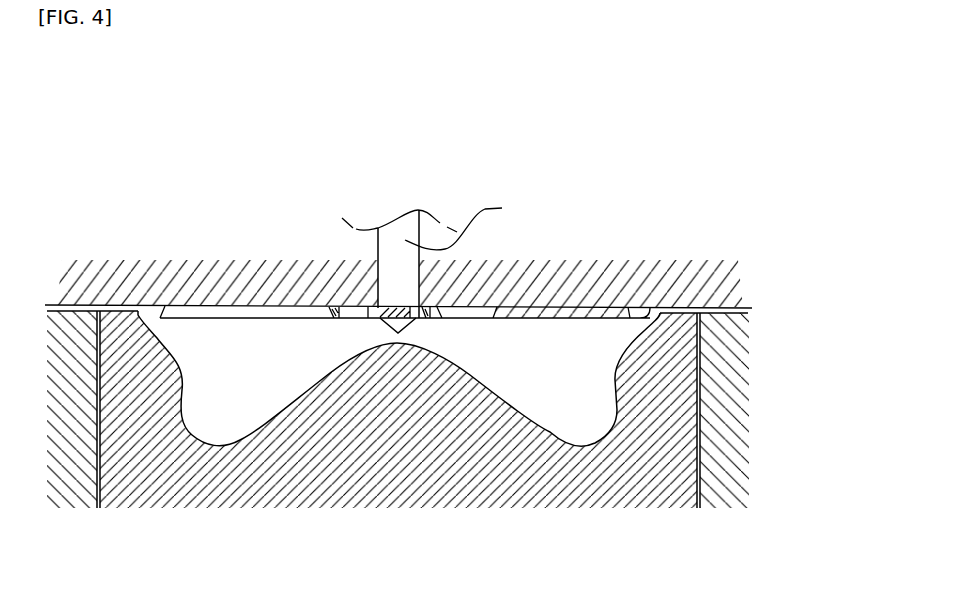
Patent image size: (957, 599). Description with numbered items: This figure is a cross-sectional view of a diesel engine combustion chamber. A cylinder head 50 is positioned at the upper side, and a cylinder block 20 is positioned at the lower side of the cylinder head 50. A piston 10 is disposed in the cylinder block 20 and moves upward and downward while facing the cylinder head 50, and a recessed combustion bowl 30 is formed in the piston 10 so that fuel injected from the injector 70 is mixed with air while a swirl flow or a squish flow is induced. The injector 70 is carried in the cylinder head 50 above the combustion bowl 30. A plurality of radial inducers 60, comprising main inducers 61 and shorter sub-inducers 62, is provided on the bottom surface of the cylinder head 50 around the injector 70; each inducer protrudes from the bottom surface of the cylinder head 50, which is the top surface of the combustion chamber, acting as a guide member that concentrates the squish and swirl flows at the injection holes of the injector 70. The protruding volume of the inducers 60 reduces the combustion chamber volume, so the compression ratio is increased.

The piston 10 is at (497, 452).
The cylinder block 20 is at (727, 351).
The combustion bowl 30 is at (563, 408).
The cylinder head 50 is at (580, 277).
The inducers 60 is at (405, 256).
The main inducers 61 is at (387, 318).
The sub-inducers 62 is at (257, 317).
The injector 70 is at (435, 266).